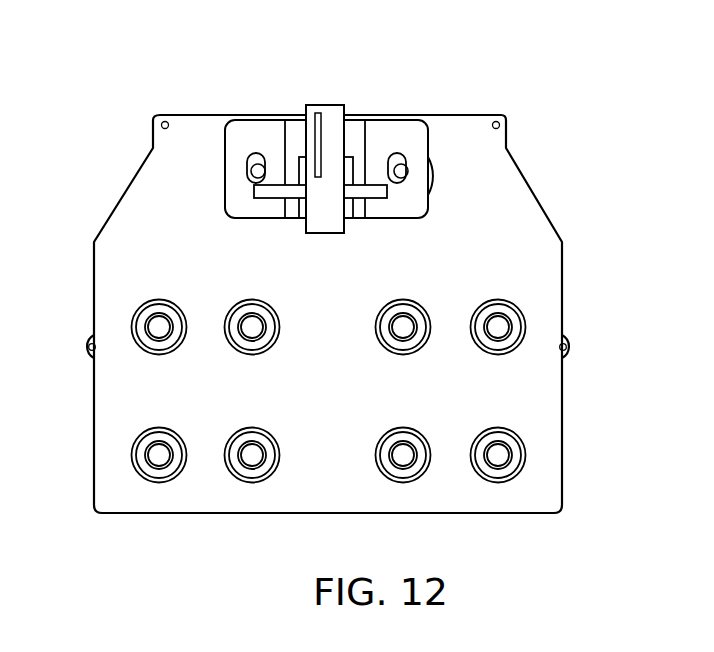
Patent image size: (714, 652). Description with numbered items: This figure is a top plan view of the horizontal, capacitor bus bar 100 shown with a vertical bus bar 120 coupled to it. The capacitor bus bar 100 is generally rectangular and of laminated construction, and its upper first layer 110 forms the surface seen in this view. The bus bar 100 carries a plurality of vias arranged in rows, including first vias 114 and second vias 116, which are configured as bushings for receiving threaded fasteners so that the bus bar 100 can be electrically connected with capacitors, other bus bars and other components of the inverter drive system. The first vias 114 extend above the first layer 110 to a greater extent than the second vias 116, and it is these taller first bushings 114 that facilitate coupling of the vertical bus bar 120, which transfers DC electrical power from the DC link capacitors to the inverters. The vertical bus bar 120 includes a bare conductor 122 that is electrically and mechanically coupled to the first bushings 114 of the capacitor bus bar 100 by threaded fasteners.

The capacitor bus bar 100 is at (517, 188).
The first layer 110 is at (350, 395).
The first vias 114 is at (433, 160).
The second vias 116 is at (140, 322).
The vertical bus bar 120 is at (352, 90).
The bare conductor 122 is at (252, 117).